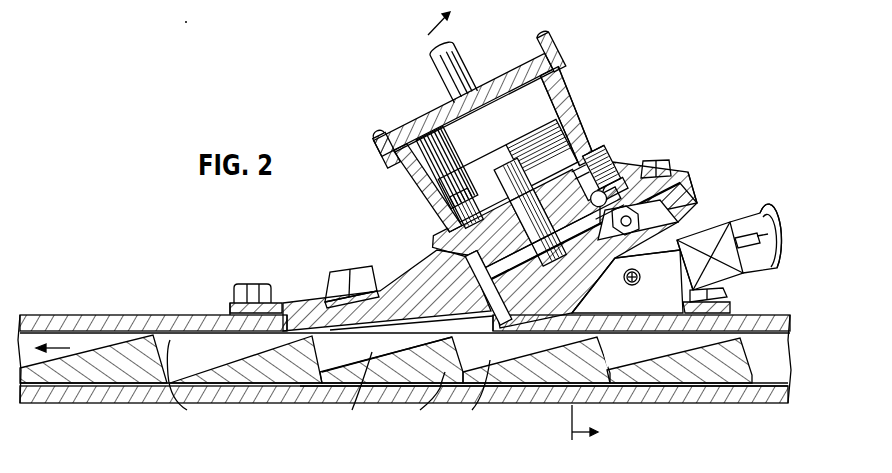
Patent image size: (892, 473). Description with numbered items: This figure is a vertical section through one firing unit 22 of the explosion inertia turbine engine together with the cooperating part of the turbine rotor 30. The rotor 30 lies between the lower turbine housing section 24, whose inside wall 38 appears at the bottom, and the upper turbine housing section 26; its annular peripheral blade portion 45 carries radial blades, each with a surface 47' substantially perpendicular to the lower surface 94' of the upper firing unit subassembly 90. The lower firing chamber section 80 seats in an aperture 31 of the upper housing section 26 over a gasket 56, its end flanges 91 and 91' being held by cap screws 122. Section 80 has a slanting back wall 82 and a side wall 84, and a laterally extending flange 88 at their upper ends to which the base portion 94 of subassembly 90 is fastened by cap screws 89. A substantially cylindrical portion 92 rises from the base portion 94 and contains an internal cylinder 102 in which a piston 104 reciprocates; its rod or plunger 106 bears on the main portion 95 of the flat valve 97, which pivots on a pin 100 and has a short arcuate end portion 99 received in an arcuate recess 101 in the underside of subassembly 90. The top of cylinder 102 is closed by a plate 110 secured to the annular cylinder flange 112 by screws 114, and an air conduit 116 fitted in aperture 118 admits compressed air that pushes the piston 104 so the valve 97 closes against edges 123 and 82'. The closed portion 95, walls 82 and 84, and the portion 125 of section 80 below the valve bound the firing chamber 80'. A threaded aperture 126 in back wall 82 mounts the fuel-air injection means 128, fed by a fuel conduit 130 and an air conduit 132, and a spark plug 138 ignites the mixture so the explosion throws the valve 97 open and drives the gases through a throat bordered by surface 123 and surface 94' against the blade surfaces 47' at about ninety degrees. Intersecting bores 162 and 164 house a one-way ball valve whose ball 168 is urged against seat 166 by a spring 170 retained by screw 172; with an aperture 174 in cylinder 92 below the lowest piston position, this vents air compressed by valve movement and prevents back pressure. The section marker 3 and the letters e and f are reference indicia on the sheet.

The section line 3- 3 is at (505, 226).
The firing unit 22 is at (625, 114).
The lower turbine housing section 24 is at (103, 403).
The upper turbine housing section 26 is at (135, 313).
The turbine rotor 30 is at (73, 385).
The aperture 31 is at (292, 303).
The inside wall of lower housing section 38 is at (532, 404).
The annular peripheral blade portion 45 is at (436, 366).
The blade surface 47' is at (306, 382).
The gasket 56 is at (230, 308).
The lower firing chamber section 80 is at (703, 211).
The firing chamber 80' is at (536, 360).
The slanting back wall 82 is at (627, 281).
The edge 82' is at (634, 267).
The side wall 84 is at (518, 276).
The peripheral laterally extending flange 88 is at (690, 195).
The cap screws 89 is at (348, 268).
The upper subassembly 90 is at (580, 120).
The end flange 91 is at (693, 360).
The end flange 91' is at (216, 289).
The substantially cylindrical portion 92 is at (564, 112).
The base portion 94 is at (500, 244).
The lower surface of upper firing unit subassembly 94' is at (387, 354).
The main portion of flat valve 95 is at (577, 292).
The flat valve 97 is at (530, 278).
The arcuate end portion 99 is at (470, 312).
The pin 100 is at (645, 221).
The recess 101 is at (434, 254).
The internal cylinder 102 is at (552, 92).
The piston 104 is at (490, 160).
The rod or plunger 106 is at (492, 184).
The plate 110 is at (490, 76).
The annular peripheral cylinder flange 112 is at (554, 66).
The screws 114 is at (545, 42).
The air conduit 116 is at (450, 62).
The aperture 118 is at (463, 108).
The cap screws 122 is at (254, 284).
The edge 123 is at (476, 350).
The portion of lower firing unit section 125 is at (616, 352).
The threaded aperture 126 is at (710, 256).
The fuel-air injection means 128 is at (733, 254).
The fuel conduit 130 is at (748, 222).
The air conduit 132 is at (775, 258).
The spark plug 138 is at (693, 265).
The bore 162 is at (586, 154).
The bore 164 is at (622, 188).
The ball valve seat 166 is at (602, 242).
The ball 168 is at (588, 213).
The spring 170 is at (590, 180).
The screw 172 is at (612, 160).
The aperture 174 is at (572, 172).
The dimension e is at (355, 387).
The dimension f is at (476, 391).